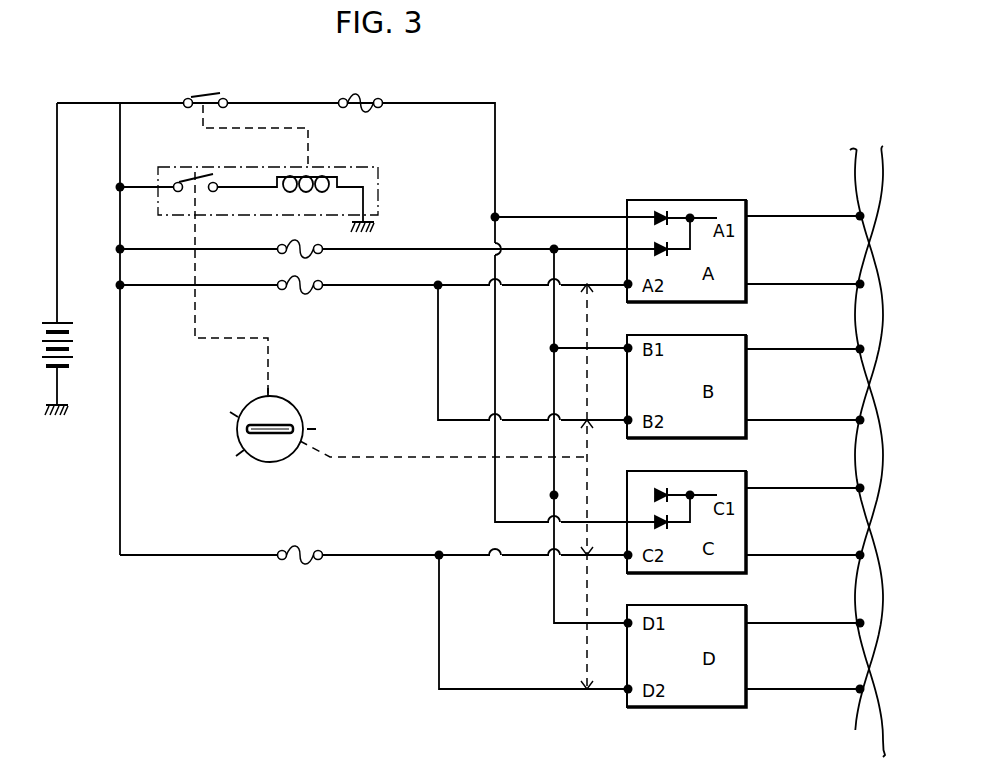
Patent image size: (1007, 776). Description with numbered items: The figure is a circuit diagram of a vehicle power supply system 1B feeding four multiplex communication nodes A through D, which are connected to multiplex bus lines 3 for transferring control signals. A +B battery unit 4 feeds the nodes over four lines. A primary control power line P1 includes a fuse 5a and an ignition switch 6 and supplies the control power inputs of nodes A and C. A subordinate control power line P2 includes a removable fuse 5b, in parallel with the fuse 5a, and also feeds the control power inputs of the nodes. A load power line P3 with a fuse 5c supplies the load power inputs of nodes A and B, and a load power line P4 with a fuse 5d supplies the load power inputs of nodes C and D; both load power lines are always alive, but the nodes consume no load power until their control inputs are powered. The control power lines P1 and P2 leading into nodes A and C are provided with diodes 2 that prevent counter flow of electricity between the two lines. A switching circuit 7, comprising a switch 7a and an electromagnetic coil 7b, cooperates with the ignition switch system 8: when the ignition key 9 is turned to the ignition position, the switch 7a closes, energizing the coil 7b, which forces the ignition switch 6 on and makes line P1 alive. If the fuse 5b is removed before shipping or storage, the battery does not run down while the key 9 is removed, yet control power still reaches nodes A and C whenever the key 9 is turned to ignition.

The power supply system 1B is at (547, 161).
The diodes 2 is at (655, 214).
The multiplex bus lines 3 is at (869, 172).
The battery unit 4 is at (93, 318).
The fuse 5a is at (362, 108).
The removable fuse 5b is at (292, 255).
The fuse 5c is at (292, 291).
The fuse 5d is at (290, 550).
The ignition switch 6 is at (219, 93).
The switching circuit 7 is at (247, 260).
The switch 7a is at (199, 178).
The electromagnetic coil 7b is at (288, 176).
The ignition switch system 8 is at (358, 424).
The ignition key 9 is at (267, 434).
The primary control power line P1 is at (430, 104).
The subordinate control power line P2 is at (441, 248).
The load power line P3 is at (360, 287).
The load power line P4 is at (375, 553).